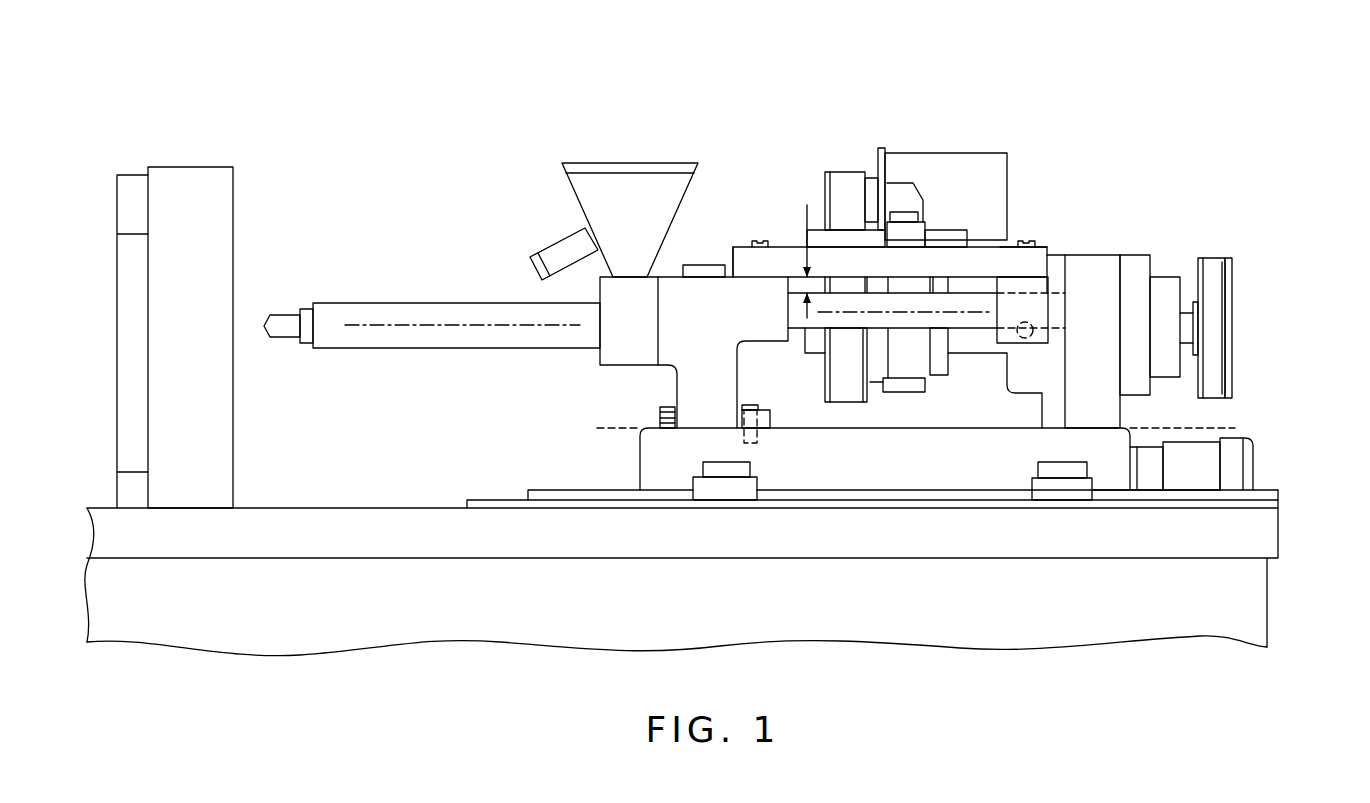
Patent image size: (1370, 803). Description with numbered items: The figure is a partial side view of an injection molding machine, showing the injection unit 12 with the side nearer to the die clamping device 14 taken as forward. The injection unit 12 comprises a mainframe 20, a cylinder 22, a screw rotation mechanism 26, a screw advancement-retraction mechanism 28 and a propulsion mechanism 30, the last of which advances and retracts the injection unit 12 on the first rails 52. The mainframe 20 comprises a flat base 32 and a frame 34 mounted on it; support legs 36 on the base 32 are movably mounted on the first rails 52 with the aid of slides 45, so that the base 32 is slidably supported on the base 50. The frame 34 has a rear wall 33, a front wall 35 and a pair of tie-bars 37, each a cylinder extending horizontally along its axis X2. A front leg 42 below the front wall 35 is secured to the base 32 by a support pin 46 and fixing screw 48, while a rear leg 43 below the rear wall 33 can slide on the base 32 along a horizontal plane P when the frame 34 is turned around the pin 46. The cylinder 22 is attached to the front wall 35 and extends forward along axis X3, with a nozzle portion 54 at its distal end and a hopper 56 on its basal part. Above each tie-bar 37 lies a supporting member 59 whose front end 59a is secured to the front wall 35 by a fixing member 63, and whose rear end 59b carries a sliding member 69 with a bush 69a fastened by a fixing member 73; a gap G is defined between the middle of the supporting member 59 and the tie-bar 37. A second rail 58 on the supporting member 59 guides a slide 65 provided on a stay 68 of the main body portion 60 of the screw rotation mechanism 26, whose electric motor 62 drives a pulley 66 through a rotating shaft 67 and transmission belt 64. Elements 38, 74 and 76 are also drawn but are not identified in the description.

The injection unit 12 is at (987, 88).
The die clamping device 14 is at (203, 155).
The mainframe 20 is at (583, 425).
The cylinder 22 is at (400, 313).
The screw rotation mechanism 26 is at (892, 117).
The screw advancement-retraction mechanism 28 is at (1252, 239).
The propulsion mechanism 30 is at (1270, 439).
The base 32 is at (828, 475).
The rear wall 33 is at (1092, 265).
The frame 34 is at (578, 368).
The front wall 35 is at (705, 283).
The support legs 36 is at (712, 470).
The tie-bars 37 is at (972, 322).
The motor mount 38 is at (1235, 466).
The front leg 42 is at (725, 367).
The rear leg 43 is at (1112, 415).
The slides 45 is at (725, 490).
The support pin 46 is at (760, 440).
The fixing screw 48 is at (660, 408).
The base 50 is at (1255, 577).
The first rails 52 is at (608, 497).
The nozzle portion 54 is at (282, 325).
The hopper 56 is at (627, 185).
The second rail 58 is at (808, 248).
The supporting member 59 is at (1007, 258).
The front end portion 59a is at (738, 247).
The rear end portion 59b is at (1037, 263).
The main body portion 60 is at (900, 418).
The electric motor 62 is at (1008, 165).
The fixing member 63 is at (758, 240).
The transmission belt 64 is at (845, 185).
The slide 65 is at (918, 233).
The pulley 66 is at (823, 393).
The rotating shaft 67 is at (870, 160).
The stays 68 is at (903, 212).
The sliding member 69 is at (1043, 305).
The bush 69a is at (1028, 338).
The fixing member 73 is at (1027, 240).
The pulley 74 is at (1212, 268).
The belt 76 is at (1232, 278).
The gap G is at (803, 285).
The horizontal plane P is at (1185, 428).
The axis of tie-bar X2 is at (897, 318).
The axis of cylinder X3 is at (470, 325).